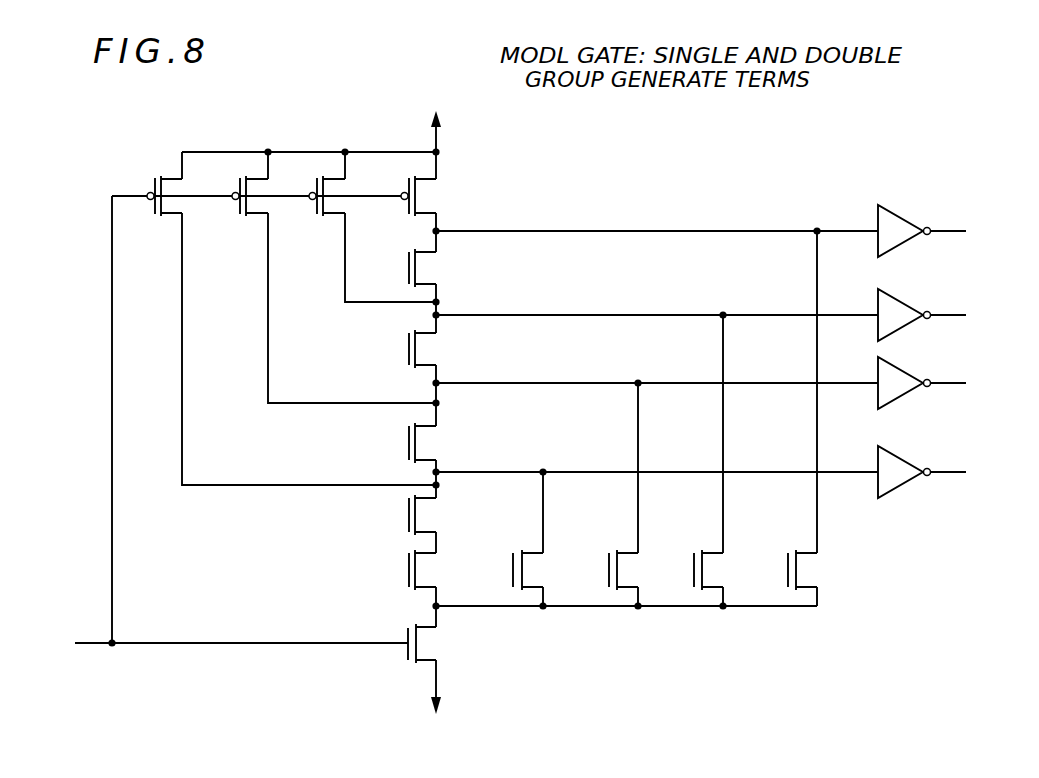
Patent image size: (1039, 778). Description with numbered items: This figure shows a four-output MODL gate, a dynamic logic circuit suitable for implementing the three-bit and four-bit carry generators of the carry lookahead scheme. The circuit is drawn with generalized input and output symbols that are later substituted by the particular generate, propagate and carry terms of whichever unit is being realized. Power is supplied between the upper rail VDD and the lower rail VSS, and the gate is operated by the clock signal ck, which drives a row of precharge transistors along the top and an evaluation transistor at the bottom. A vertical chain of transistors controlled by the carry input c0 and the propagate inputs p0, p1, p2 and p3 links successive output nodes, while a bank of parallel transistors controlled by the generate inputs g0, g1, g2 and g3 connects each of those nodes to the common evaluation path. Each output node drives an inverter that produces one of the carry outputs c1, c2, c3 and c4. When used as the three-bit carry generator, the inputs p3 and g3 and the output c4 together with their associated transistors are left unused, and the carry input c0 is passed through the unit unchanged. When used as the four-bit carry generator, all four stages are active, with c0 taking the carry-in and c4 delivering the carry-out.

The positive supply voltage rail VDD is at (324, 127).
The negative supply (ground) rail VSS is at (428, 705).
The clock signal input and precharge/evaluate transistors ck is at (240, 407).
The propagate input p3 is at (409, 269).
The propagate input p2 is at (409, 349).
The propagate input p1 is at (409, 443).
The propagate input p0 is at (409, 516).
The carry input c0 is at (409, 570).
The generate input g0 is at (513, 570).
The generate input g1 is at (609, 570).
The generate input g2 is at (694, 570).
The generate input g3 is at (788, 570).
The carry output c1 is at (718, 472).
The carry output c2 is at (718, 383).
The carry output c3 is at (718, 315).
The carry output c4 is at (718, 231).